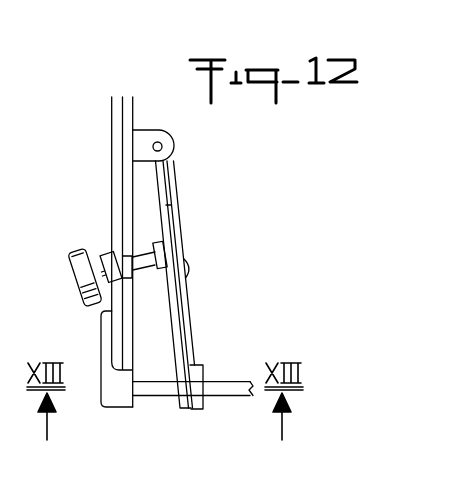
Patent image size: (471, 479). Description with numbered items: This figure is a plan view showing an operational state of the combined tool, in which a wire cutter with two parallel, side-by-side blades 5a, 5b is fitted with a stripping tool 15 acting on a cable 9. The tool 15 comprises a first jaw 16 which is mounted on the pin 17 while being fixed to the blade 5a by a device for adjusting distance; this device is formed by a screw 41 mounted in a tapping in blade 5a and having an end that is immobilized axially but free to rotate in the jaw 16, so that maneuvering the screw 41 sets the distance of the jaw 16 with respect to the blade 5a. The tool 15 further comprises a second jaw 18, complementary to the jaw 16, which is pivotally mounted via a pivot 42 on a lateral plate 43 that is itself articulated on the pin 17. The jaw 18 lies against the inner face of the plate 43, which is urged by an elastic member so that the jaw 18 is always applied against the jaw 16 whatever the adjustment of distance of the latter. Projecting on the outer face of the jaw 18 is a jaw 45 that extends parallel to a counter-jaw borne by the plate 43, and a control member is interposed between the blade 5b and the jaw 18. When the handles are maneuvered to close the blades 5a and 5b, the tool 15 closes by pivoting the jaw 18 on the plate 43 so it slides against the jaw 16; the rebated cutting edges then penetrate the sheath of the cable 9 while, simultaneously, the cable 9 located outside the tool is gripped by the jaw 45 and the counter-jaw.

The blade 5a is at (112, 112).
The blade 5b is at (133, 110).
The cable 9 is at (228, 391).
The tool 15 is at (195, 284).
The first jaw 16 is at (173, 315).
The pin 17 is at (162, 146).
The second jaw 18 is at (177, 307).
The screw 41 is at (78, 253).
The pivot 42 is at (192, 272).
The lateral plate 43 is at (188, 327).
The jaw 45 is at (198, 368).